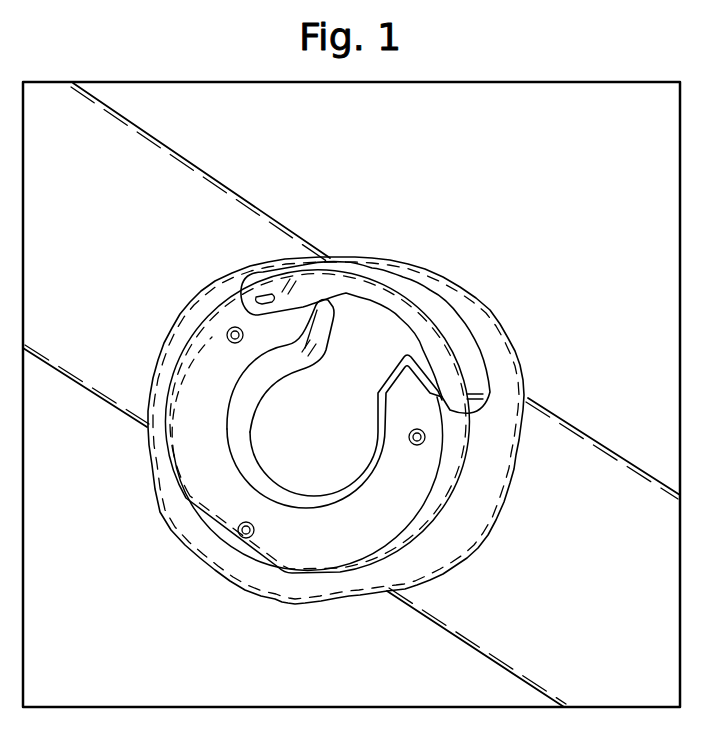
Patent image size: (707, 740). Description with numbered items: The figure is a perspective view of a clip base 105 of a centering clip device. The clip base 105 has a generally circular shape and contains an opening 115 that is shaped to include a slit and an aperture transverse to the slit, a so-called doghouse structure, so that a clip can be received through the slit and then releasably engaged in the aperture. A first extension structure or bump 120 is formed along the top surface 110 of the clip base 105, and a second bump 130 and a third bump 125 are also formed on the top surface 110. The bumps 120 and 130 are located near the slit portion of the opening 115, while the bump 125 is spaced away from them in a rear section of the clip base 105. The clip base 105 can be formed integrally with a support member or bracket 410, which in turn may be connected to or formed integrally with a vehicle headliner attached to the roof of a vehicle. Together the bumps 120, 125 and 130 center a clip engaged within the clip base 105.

The clip base 105 is at (351, 395).
The top surface 110 is at (325, 543).
The opening 115 is at (370, 342).
The first extension structure or bump 120 is at (228, 332).
The third bump 125 is at (240, 533).
The second bump 130 is at (426, 440).
The support member/bracket (stiffener) 410 is at (622, 486).